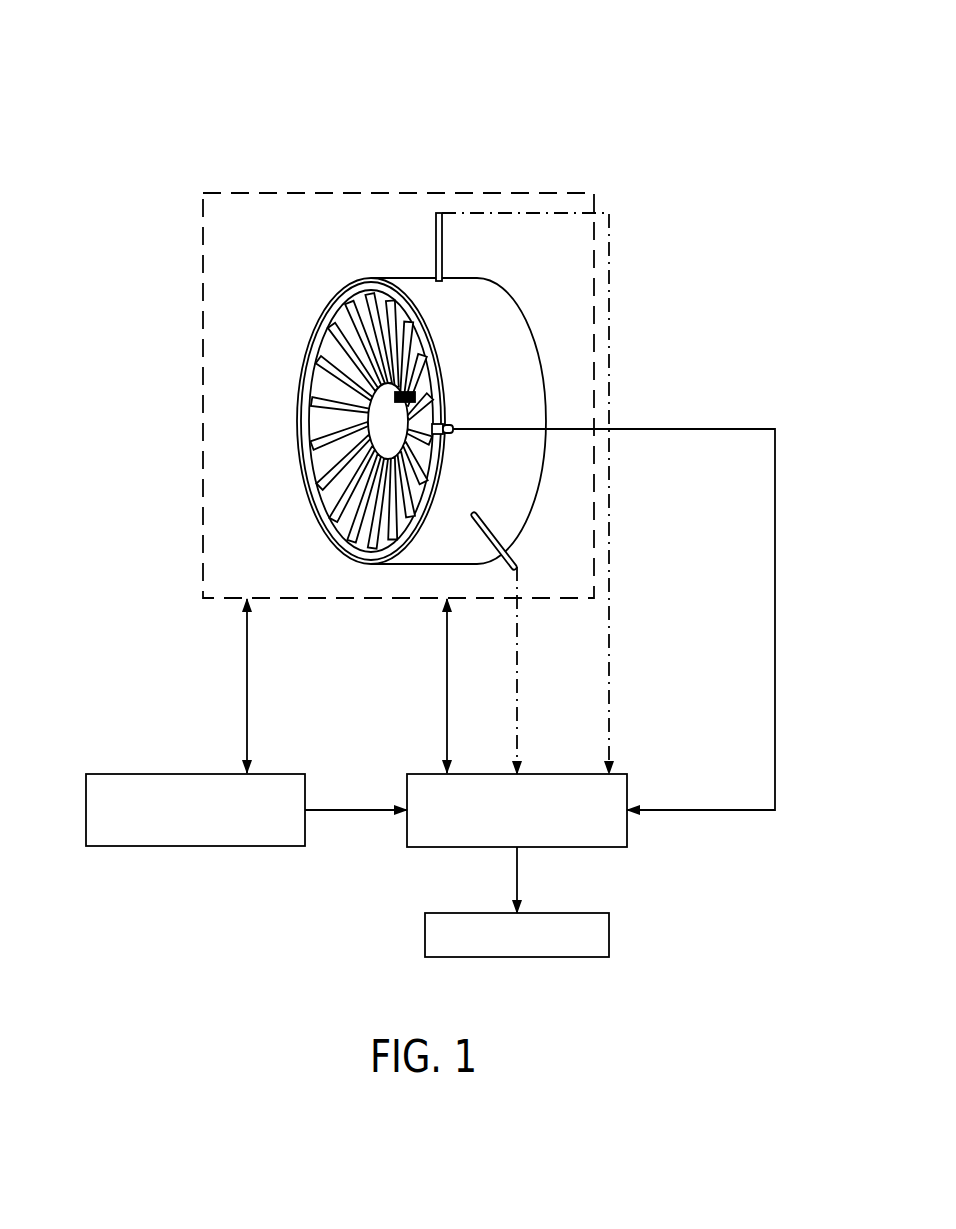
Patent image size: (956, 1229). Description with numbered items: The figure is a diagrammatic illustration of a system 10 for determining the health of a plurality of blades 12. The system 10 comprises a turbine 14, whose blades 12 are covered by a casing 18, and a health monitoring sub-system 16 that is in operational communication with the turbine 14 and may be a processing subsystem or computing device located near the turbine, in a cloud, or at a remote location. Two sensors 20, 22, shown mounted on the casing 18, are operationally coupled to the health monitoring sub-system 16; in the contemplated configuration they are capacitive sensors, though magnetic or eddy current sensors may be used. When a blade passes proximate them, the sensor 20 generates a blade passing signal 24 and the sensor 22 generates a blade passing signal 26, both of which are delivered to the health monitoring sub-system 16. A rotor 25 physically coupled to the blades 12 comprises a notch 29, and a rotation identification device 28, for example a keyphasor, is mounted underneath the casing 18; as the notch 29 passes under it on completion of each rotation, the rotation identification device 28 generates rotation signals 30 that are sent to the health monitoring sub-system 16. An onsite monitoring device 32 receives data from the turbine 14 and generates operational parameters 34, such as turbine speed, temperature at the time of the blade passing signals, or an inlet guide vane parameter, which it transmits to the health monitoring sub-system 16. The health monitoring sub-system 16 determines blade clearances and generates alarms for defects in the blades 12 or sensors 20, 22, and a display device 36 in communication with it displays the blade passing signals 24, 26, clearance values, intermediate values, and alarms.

The system 10 is at (140, 52).
The blades 12 is at (345, 362).
The turbine 14 is at (203, 352).
The health monitoring sub-system 16 is at (627, 782).
The casing 18 is at (513, 312).
The sensor 20 is at (436, 232).
The sensor 22 is at (517, 552).
The blade passing signal 24 is at (609, 262).
The rotor 25 is at (383, 417).
The blade passing signal 26 is at (517, 714).
The rotation identification device 28 is at (455, 420).
The notch 29 is at (395, 397).
The rotation signals 30 is at (775, 587).
The onsite monitoring device 32 is at (112, 773).
The operational parameters 34 is at (357, 812).
The display device 36 is at (609, 935).